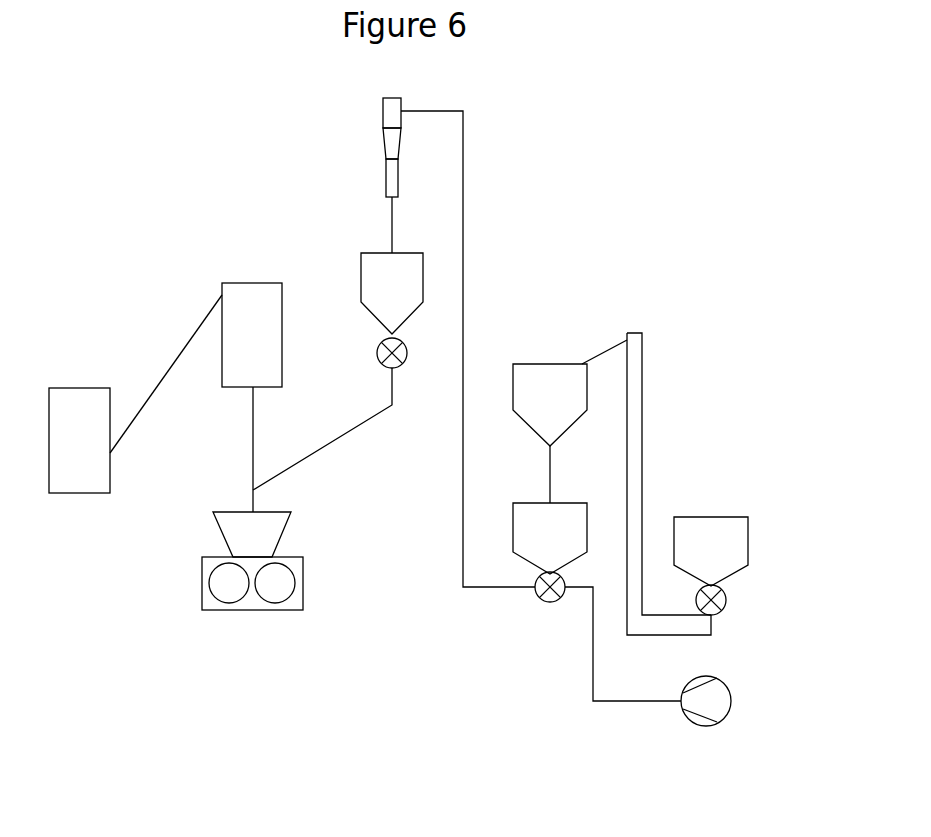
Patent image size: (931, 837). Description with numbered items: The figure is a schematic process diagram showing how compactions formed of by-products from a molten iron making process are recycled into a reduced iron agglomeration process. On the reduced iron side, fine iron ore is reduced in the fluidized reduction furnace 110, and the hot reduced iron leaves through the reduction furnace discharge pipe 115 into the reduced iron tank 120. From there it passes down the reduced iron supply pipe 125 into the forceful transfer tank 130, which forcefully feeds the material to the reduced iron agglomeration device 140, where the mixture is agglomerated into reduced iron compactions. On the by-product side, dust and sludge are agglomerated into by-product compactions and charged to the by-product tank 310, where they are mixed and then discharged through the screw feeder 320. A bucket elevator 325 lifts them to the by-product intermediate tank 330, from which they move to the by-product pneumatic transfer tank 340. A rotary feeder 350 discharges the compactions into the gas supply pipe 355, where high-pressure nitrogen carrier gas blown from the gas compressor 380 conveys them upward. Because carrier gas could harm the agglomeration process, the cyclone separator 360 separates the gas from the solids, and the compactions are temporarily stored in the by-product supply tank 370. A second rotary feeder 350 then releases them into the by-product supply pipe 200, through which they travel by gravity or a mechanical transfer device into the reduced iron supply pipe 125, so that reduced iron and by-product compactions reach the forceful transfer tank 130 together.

The fluidized reduction furnace 110 is at (77, 388).
The reduction furnace discharge pipe 115 is at (168, 371).
The reduced iron tank 120 is at (253, 283).
The reduced iron supply pipe 125 is at (252, 437).
The forceful transfer tank 130 is at (213, 525).
The reduced iron agglomeration device 140 is at (202, 575).
The by-product supply pipe 200 is at (345, 433).
The by-product tank 310 is at (705, 517).
The screw feeder 320 is at (722, 610).
The bucket elevator 325 is at (642, 367).
The by-product intermediate tank 330 is at (545, 363).
The by-product pneumatic transfer tank 340 is at (518, 503).
The rotary feeder 350 is at (377, 352).
The gas supply pipe 355 is at (463, 200).
The cyclone separator 360 is at (383, 113).
The by-product supply tank 370 is at (361, 272).
The gas compressor 380 is at (723, 718).